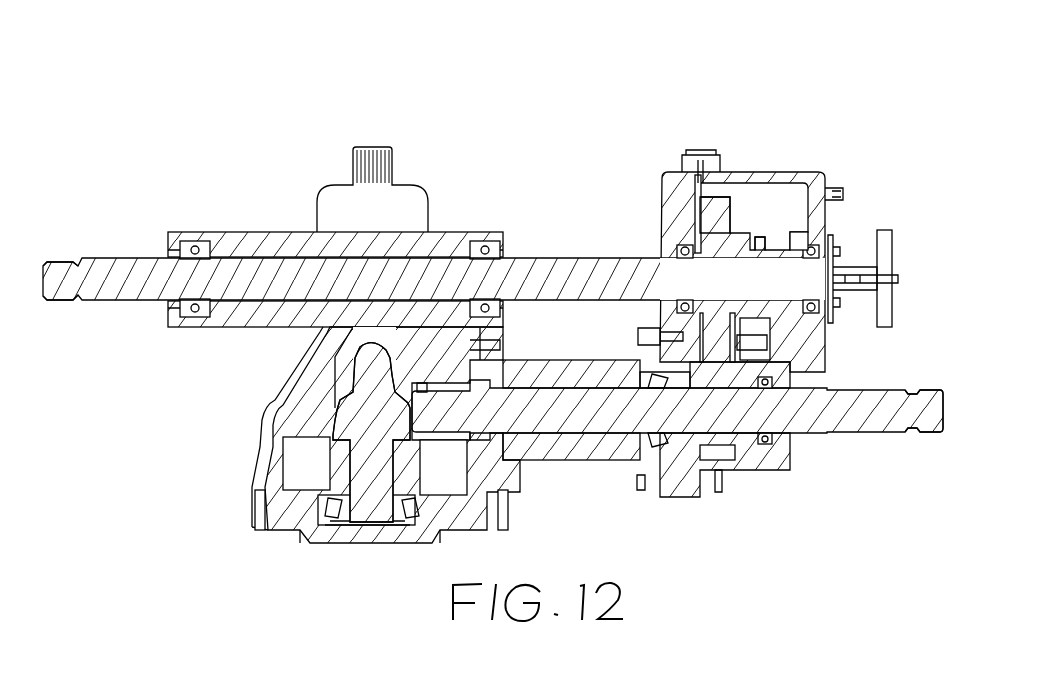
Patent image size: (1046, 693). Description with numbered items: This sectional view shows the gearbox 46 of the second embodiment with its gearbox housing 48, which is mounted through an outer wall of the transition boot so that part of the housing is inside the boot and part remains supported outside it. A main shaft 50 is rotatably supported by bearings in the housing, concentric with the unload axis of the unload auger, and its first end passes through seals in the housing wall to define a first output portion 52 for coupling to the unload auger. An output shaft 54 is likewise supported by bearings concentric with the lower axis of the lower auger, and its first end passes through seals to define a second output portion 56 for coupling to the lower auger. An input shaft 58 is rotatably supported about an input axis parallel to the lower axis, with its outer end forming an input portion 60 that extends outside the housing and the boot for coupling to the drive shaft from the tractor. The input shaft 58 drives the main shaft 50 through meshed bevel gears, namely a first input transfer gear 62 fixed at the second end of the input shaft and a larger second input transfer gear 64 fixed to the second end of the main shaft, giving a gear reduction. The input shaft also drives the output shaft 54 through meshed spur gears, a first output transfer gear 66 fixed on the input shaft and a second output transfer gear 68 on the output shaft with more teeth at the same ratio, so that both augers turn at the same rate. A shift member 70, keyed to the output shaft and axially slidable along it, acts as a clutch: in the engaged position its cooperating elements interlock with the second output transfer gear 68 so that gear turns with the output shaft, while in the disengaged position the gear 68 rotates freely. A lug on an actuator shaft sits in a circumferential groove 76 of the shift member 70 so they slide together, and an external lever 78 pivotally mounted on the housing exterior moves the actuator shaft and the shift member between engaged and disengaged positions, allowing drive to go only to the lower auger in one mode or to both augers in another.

The gearbox 46 is at (611, 126).
The gearbox housing 48 is at (660, 210).
The main shaft 50 is at (370, 337).
The first output portion 52 is at (380, 166).
The output shaft 54 is at (557, 276).
The second output portion 56 is at (90, 273).
The input shaft 58 is at (593, 410).
The input portion 60 is at (876, 428).
The first input transfer gear 62 is at (380, 367).
The second input transfer gear 64 is at (303, 453).
The first output transfer gear 66 is at (720, 450).
The second output transfer gear 68 is at (733, 210).
The shift member 70 is at (786, 222).
The circumferential groove 76 is at (759, 238).
The external lever 78 is at (872, 236).